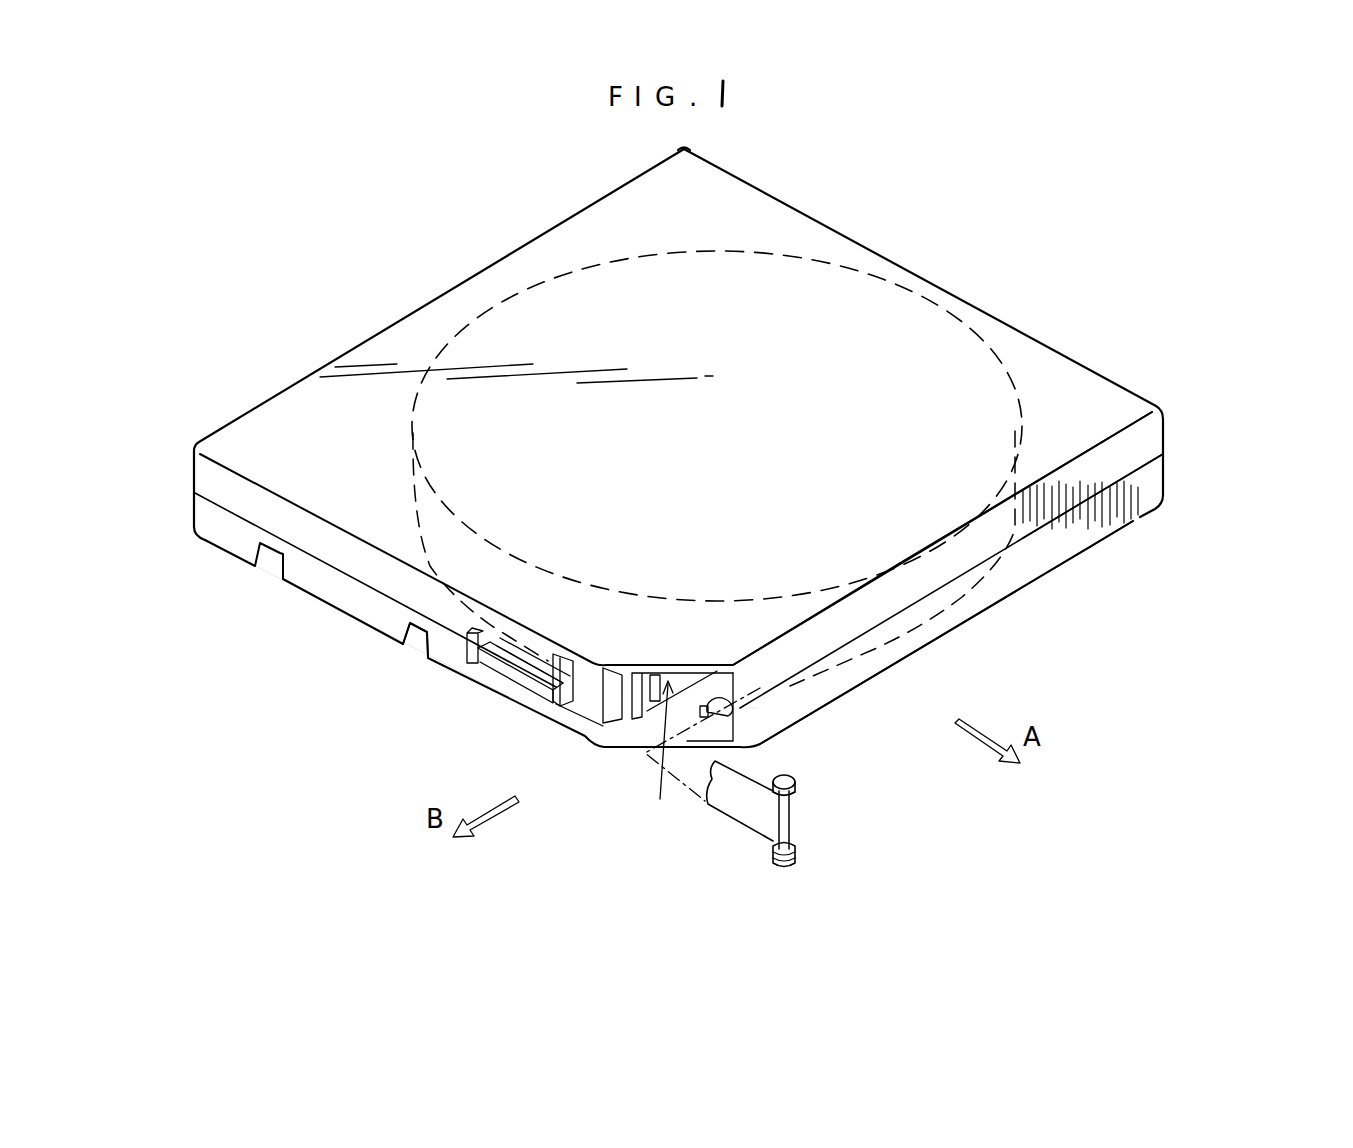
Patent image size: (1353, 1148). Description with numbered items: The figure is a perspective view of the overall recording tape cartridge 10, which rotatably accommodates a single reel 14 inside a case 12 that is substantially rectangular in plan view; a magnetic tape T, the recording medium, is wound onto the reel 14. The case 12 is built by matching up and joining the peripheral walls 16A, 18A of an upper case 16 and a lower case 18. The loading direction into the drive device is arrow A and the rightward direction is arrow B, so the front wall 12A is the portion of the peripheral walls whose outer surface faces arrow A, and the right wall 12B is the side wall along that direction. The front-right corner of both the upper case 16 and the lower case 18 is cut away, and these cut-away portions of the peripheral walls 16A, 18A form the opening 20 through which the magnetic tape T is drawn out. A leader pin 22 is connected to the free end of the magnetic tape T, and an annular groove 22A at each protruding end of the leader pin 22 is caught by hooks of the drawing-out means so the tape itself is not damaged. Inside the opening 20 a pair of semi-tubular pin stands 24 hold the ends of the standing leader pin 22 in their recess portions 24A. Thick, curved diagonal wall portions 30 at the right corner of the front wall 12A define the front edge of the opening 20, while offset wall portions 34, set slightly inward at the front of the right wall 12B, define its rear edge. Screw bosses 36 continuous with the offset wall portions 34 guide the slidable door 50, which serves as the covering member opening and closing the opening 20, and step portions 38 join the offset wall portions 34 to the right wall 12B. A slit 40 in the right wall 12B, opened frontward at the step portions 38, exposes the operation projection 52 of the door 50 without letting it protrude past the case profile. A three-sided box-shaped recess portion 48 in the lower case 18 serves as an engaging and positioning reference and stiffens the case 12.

The recording tape cartridge 10 is at (944, 246).
The case 12 is at (1232, 490).
The reel 14 is at (800, 277).
The upper case 16 is at (1168, 424).
The lower case 18 is at (1168, 475).
The peripheral wall 16A is at (978, 545).
The peripheral wall 18A is at (990, 595).
The front wall 12A is at (1098, 578).
The right wall 12B is at (282, 612).
The opening 20 is at (669, 829).
The leader pin 22 is at (800, 866).
The annular groove 22A is at (883, 843).
The pin stand 24 is at (780, 677).
The recess portion 24A is at (716, 693).
The diagonal wall portion 30 is at (750, 722).
The offset wall portion 34 is at (593, 713).
The screw boss 36 is at (617, 690).
The step portion 38 is at (558, 715).
The slit 40 is at (497, 685).
The recess portion 48 is at (420, 647).
The door 50 is at (517, 633).
The operation projection 52 is at (480, 632).
The magnetic tape T is at (737, 808).